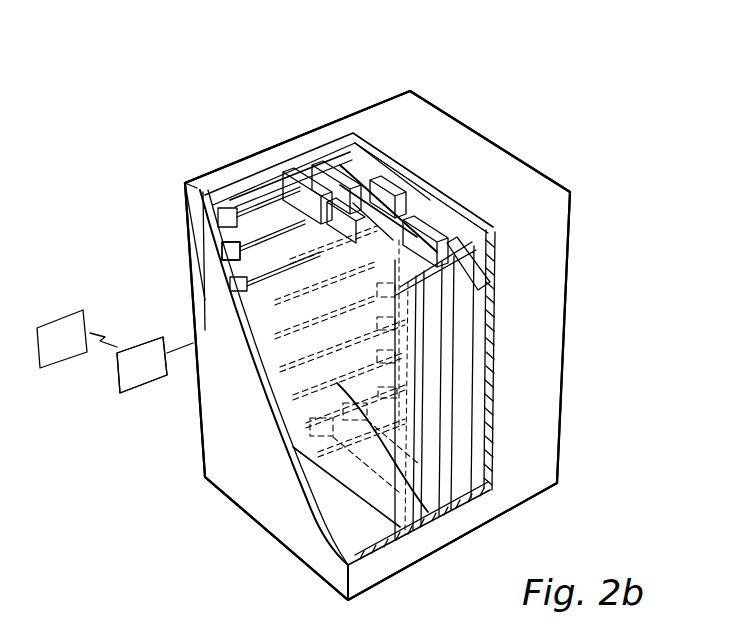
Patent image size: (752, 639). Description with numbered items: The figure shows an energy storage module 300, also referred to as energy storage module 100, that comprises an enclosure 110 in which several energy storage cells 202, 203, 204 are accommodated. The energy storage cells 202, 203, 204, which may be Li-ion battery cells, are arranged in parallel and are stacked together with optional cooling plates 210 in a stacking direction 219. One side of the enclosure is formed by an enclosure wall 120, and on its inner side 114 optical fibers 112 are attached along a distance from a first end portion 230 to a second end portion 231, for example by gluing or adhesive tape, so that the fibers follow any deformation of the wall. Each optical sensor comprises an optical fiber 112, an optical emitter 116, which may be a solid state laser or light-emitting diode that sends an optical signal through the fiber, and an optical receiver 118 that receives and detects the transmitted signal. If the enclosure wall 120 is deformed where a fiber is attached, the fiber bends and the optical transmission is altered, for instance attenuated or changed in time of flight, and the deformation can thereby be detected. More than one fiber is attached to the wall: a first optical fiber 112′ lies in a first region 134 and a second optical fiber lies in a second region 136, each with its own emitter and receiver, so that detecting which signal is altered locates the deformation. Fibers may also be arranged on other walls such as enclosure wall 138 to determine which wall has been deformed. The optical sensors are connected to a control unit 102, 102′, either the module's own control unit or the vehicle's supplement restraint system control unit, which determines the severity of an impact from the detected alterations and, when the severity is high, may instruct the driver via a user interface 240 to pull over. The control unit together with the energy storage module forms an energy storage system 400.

The energy storage module 100 is at (399, 310).
The energy storage module 300 is at (502, 85).
The control unit 102 is at (120, 380).
The control unit of a supplement restraint system 102′ is at (102, 390).
The enclosure 110 is at (362, 573).
The optical fiber 112 is at (243, 230).
The first optical fiber 112′ is at (428, 512).
The inner side 114 is at (265, 212).
The optical emitter 116 is at (217, 217).
The optical receiver 118 is at (405, 215).
The enclosure wall 120 is at (175, 227).
The first region 134 is at (317, 367).
The second region 136 is at (217, 278).
The enclosure wall 138 is at (322, 578).
The energy storage cell 202 is at (280, 172).
The energy storage cell 203 is at (318, 165).
The energy storage cell 204 is at (368, 182).
The cooling plate 210 is at (480, 310).
The stacking direction 219 is at (503, 137).
The first end portion 230 is at (185, 182).
The second end portion 231 is at (415, 73).
The user interface 240 is at (65, 357).
The energy storage system 400 is at (632, 138).